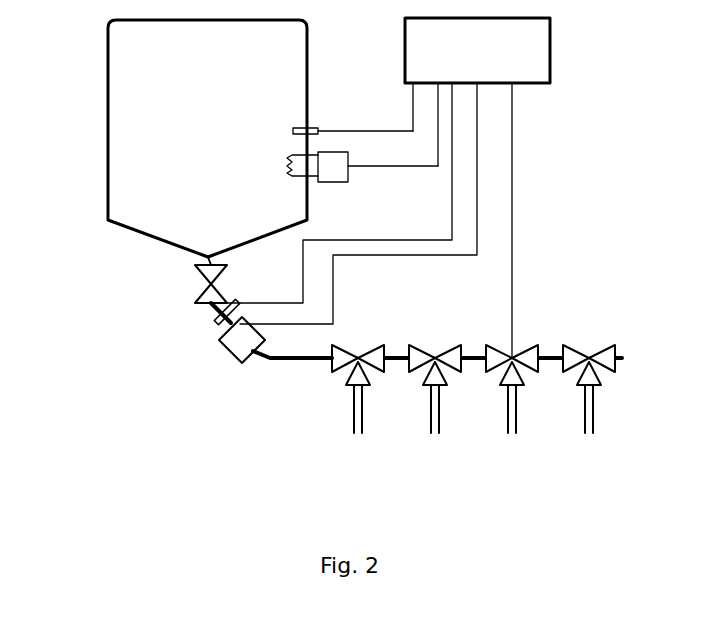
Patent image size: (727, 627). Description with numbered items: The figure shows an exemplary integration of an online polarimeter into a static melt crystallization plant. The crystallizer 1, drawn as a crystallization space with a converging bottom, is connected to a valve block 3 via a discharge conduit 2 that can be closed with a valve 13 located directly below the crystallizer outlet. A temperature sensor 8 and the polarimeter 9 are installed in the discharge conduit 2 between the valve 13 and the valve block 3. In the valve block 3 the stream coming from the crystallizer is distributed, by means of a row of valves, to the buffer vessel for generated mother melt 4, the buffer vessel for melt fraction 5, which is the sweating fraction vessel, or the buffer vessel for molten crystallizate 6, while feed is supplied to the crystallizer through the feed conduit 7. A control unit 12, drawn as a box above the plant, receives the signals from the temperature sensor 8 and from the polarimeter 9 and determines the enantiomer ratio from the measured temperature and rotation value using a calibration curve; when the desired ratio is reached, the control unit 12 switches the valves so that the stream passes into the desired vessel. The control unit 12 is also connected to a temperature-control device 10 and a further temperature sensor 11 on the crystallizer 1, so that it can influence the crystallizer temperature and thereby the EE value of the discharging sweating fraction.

The crystallizer 1 is at (138, 171).
The discharge conduit 2 is at (272, 363).
The valve block 3 is at (608, 345).
The buffer vessel for generated (mother) melt 4 is at (358, 435).
The buffer vessel for melt fraction 5 is at (435, 435).
The buffer vessel for molten crystallizate 6 is at (512, 435).
The feed conduit 7 is at (588, 435).
The temperature sensor 8 is at (222, 323).
The polarimeter 9 is at (232, 357).
The temperature-control device 10 is at (340, 176).
The temperature sensor 11 is at (335, 130).
The control unit 12 is at (535, 66).
The valve 13 is at (200, 292).